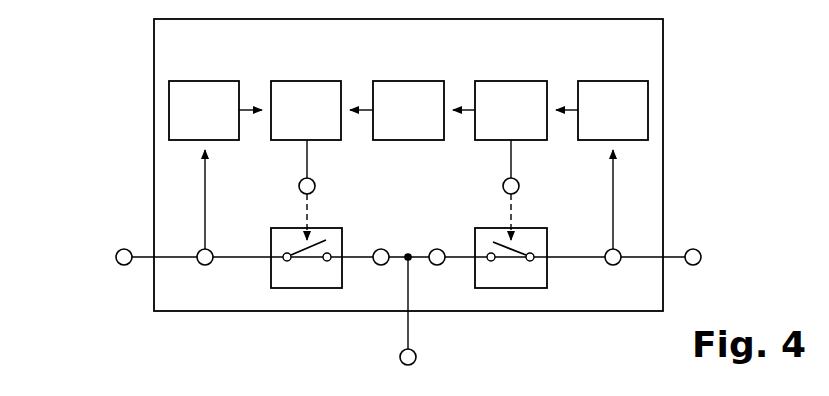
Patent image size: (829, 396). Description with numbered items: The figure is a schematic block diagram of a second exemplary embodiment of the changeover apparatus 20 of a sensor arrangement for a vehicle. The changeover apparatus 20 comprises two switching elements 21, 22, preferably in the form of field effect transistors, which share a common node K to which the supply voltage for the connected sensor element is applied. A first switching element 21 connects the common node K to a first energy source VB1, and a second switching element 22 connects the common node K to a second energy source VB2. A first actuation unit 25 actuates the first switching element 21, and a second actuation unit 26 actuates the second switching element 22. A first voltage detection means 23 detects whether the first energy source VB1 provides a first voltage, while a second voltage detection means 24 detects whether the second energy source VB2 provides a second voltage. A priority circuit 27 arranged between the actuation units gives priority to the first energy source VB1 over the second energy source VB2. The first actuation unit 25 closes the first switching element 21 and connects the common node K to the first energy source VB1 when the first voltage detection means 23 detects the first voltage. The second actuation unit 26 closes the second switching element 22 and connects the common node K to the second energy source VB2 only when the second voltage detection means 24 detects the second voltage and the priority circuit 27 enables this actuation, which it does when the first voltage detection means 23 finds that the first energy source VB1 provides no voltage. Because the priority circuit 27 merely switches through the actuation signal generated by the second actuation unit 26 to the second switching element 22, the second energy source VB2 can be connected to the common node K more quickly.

The changeover apparatus 20 is at (154, 185).
The first switching element 21 is at (510, 288).
The second switching element 22 is at (307, 288).
The first voltage detection means 23 is at (614, 81).
The second voltage detection means 24 is at (205, 81).
The first actuation unit 25 is at (511, 81).
The second actuation unit 26 is at (307, 81).
The priority circuit 27 is at (408, 81).
The common node K is at (408, 254).
The first energy source VB1 is at (702, 258).
The second energy source VB2 is at (115, 257).